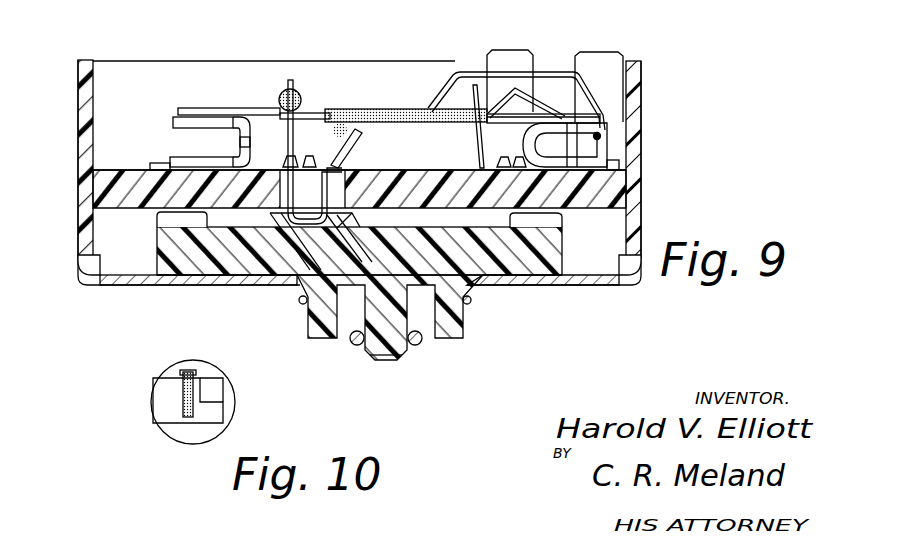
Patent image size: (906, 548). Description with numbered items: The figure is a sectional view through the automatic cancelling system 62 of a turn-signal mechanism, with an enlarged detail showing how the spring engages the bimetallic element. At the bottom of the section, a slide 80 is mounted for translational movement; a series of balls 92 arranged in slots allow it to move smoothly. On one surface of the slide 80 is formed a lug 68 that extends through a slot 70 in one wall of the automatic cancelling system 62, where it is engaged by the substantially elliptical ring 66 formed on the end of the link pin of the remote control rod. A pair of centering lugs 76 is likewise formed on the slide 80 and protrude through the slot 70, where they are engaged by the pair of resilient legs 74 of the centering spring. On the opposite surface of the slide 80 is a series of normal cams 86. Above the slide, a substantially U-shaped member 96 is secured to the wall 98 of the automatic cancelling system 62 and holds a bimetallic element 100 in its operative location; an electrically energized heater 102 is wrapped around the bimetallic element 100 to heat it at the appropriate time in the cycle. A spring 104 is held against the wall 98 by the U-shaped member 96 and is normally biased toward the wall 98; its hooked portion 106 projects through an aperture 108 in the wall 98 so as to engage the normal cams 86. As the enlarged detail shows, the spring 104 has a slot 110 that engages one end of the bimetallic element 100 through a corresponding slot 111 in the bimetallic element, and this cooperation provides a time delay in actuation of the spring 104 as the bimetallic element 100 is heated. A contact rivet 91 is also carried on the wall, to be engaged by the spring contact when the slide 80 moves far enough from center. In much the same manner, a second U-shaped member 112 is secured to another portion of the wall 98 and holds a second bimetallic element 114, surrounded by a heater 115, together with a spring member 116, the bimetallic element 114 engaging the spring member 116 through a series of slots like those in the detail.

In FIG. 9, the automatic cancelling system 62 is at (152, 61).
In FIG. 10, the automatic cancelling system 62 is at (160, 428).
In FIG. 9, the elliptical ring 66 is at (418, 343).
In FIG. 9, the lug 68 is at (387, 360).
In FIG. 9, the slot 70 is at (560, 287).
In FIG. 9, the resilient legs 74 is at (300, 301).
In FIG. 9, the centering lugs 76 is at (322, 340).
In FIG. 9, the slide 80 is at (157, 253).
In FIG. 9, the normal cams 86 is at (321, 244).
In FIG. 9, the contact rivet 91 is at (316, 165).
In FIG. 9, the balls 92 is at (233, 276).
In FIG. 9, the U-shaped member 96 is at (619, 158).
In FIG. 9, the wall 98 is at (120, 190).
In FIG. 9, the bimetallic element 100 is at (325, 110).
In FIG. 10, the bimetallic element 100 is at (186, 408).
In FIG. 9, the heater 102 is at (393, 108).
In FIG. 10, the heater 102 is at (182, 372).
In FIG. 9, the spring 104 is at (450, 167).
In FIG. 10, the spring 104 is at (160, 398).
In FIG. 9, the hooked portion 106 is at (300, 200).
In FIG. 9, the aperture 108 is at (283, 167).
In FIG. 10, the slot 110 is at (200, 380).
In FIG. 9, the slot 111 is at (294, 84).
In FIG. 9, the U-shaped member 112 is at (173, 121).
In FIG. 9, the bimetallic element 114 is at (255, 110).
In FIG. 9, the heater 115 is at (288, 90).
In FIG. 9, the spring member 116 is at (250, 158).